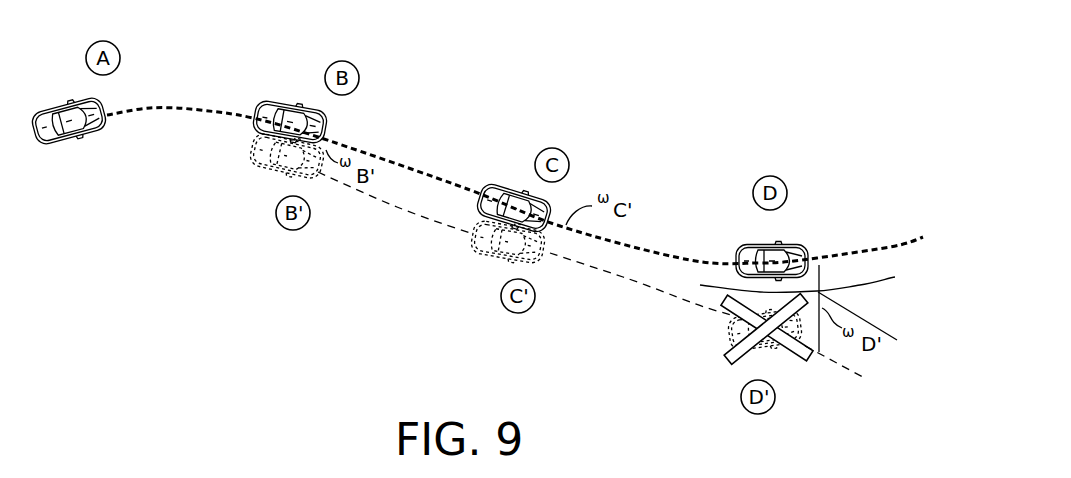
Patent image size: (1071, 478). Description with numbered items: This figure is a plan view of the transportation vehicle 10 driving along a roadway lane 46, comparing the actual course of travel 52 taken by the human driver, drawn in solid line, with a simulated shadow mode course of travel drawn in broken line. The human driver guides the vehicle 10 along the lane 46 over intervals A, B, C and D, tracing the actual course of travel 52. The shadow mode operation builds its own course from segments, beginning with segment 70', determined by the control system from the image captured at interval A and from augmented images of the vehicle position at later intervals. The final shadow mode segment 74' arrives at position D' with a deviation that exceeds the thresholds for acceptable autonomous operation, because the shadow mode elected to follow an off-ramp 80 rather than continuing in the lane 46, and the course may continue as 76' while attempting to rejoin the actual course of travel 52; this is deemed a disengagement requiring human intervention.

The transportation vehicle 10 is at (56, 96).
The lane 46 is at (161, 93).
The actual course of travel 52 is at (206, 112).
The shadow mode course of travel segment 70' is at (322, 200).
The shadow mode course of travel 74' is at (642, 303).
The shadow mode course of travel continuation 76' is at (834, 390).
The off-ramp 80 is at (874, 366).